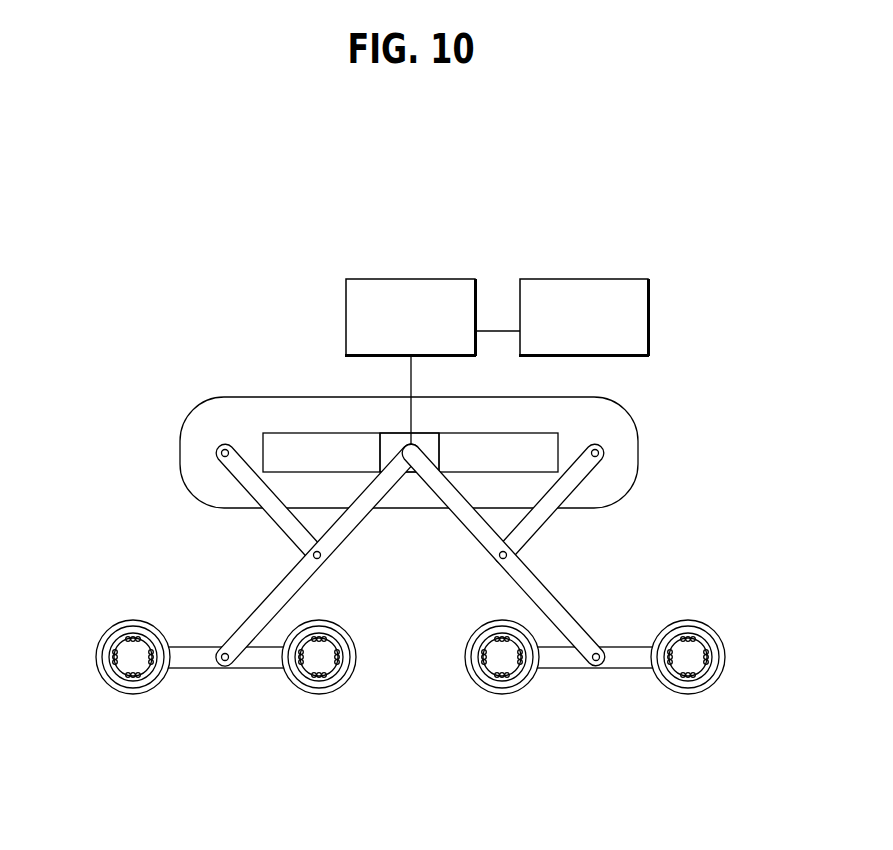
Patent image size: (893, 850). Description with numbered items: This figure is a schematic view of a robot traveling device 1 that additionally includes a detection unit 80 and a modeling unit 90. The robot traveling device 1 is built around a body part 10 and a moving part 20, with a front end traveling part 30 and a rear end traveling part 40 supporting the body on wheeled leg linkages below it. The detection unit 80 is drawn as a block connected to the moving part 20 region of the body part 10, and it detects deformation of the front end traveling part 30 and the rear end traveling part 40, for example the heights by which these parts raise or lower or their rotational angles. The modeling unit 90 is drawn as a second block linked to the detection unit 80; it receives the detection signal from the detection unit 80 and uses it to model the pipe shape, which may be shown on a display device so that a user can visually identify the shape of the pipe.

The robot traveling device 1 is at (723, 155).
The body part 10 is at (210, 394).
The moving part 20 is at (392, 438).
The front end traveling part 30 is at (247, 692).
The rear end traveling part 40 is at (575, 692).
The detection unit 80 is at (409, 279).
The modeling unit 90 is at (582, 279).